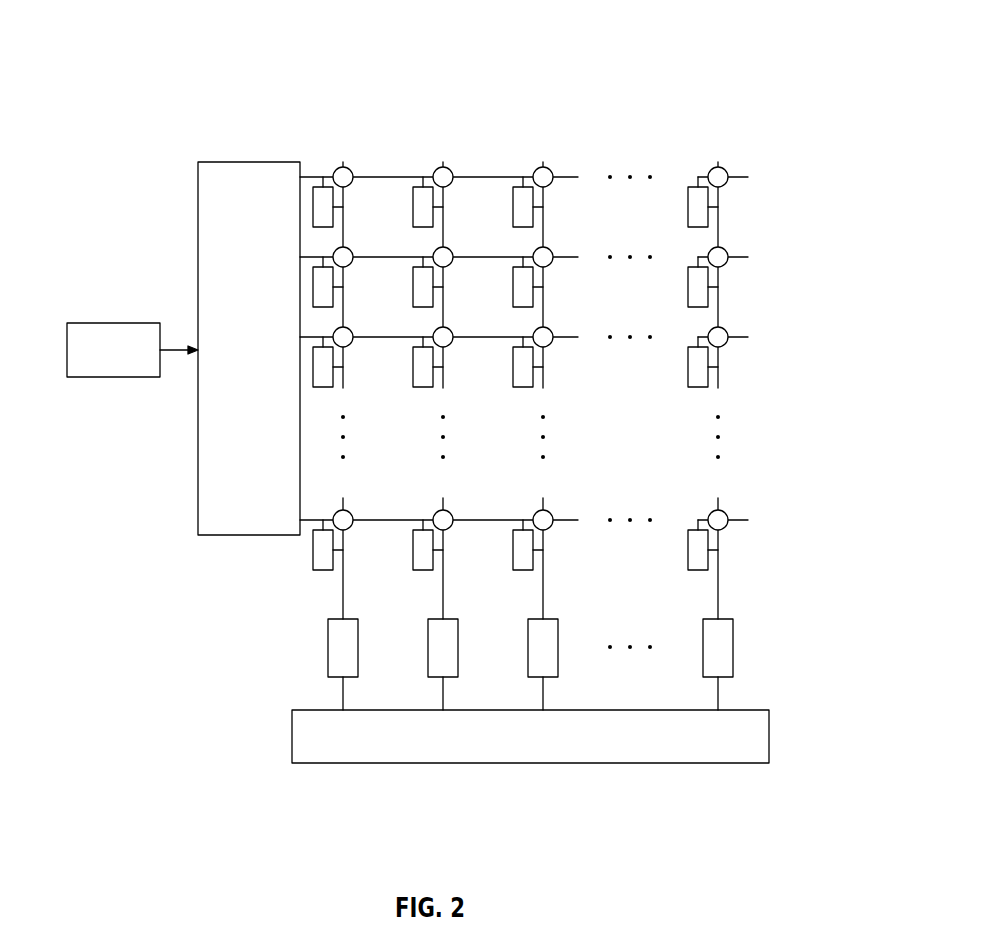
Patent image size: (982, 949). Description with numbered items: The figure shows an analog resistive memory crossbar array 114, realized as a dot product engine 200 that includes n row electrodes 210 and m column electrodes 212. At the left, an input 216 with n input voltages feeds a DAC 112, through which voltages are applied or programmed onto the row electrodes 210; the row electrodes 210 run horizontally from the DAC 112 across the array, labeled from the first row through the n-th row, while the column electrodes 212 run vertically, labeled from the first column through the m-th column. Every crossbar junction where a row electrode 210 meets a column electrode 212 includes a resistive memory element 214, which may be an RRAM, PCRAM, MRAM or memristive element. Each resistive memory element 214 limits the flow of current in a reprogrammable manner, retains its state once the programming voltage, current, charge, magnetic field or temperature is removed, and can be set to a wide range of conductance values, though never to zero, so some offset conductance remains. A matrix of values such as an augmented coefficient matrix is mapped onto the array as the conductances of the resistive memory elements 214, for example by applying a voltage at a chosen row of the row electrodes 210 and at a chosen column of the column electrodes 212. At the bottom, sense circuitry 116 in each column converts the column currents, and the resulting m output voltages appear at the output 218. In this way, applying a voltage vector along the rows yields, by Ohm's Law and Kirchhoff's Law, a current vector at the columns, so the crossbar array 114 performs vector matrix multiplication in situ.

The analog resistive memory crossbar array 114 is at (765, 33).
The DAC 112 is at (227, 160).
The dot product engine 200 is at (430, 126).
The row electrodes 210 is at (748, 180).
The column electrodes 212 is at (721, 160).
The resistive memory element 214 is at (698, 389).
The sense circuitry 116 is at (714, 619).
The input 216 is at (90, 323).
The output 218 is at (318, 710).